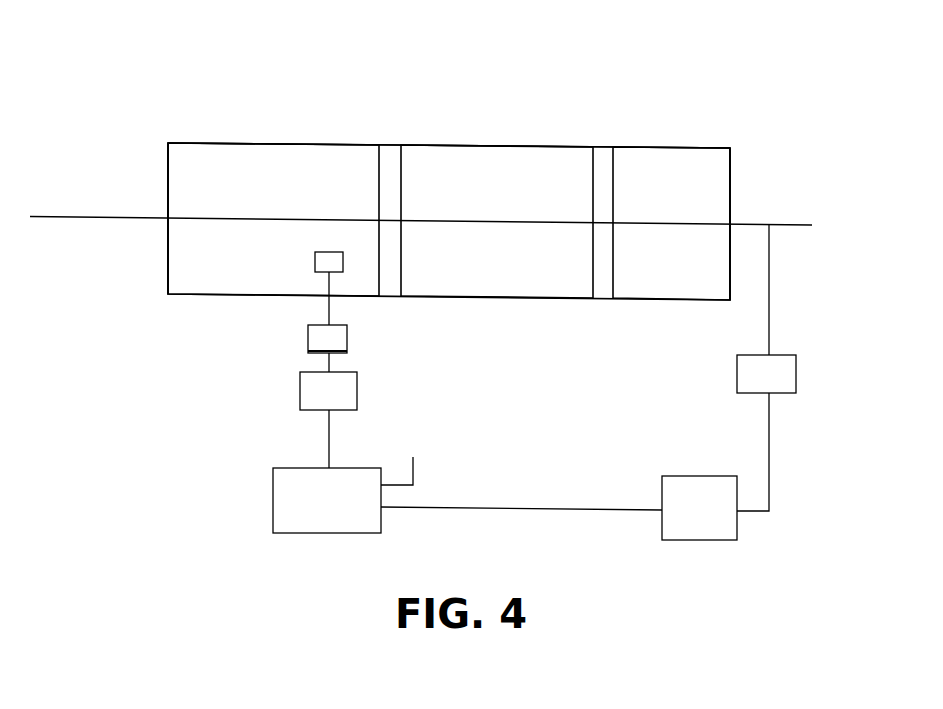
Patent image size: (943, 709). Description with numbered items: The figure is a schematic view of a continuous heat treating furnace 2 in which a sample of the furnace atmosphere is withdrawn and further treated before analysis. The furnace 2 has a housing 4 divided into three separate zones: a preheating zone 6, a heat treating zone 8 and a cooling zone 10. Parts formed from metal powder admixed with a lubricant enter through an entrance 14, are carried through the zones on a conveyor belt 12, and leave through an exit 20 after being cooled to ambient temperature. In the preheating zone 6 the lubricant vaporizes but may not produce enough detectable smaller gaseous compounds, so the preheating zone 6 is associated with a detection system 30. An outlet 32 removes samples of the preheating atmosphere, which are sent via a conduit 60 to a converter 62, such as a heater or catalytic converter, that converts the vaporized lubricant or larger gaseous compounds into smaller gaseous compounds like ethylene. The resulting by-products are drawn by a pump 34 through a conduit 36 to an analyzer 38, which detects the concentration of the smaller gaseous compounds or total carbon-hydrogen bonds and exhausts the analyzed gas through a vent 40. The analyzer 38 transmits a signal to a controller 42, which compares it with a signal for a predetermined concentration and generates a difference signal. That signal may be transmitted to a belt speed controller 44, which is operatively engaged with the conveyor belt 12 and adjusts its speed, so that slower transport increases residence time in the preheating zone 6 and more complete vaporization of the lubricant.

The heat treating furnace 2 is at (483, 107).
The housing 4 is at (289, 144).
The preheating zone 6 is at (256, 199).
The heat treating zone 8 is at (482, 200).
The cooling zone 10 is at (654, 202).
The conveyor belt 12 is at (78, 217).
The entrance 14 is at (168, 216).
The exit 20 is at (730, 222).
The detection system 30 is at (268, 445).
The outlet 32 is at (314, 257).
The pump 34 is at (311, 404).
The conduit 36 is at (329, 450).
The analyzer 38 is at (305, 512).
The vent 40 is at (428, 480).
The controller 42 is at (680, 515).
The belt speed controller 44 is at (750, 385).
The conduit 60 is at (330, 307).
The converter 62 is at (327, 339).